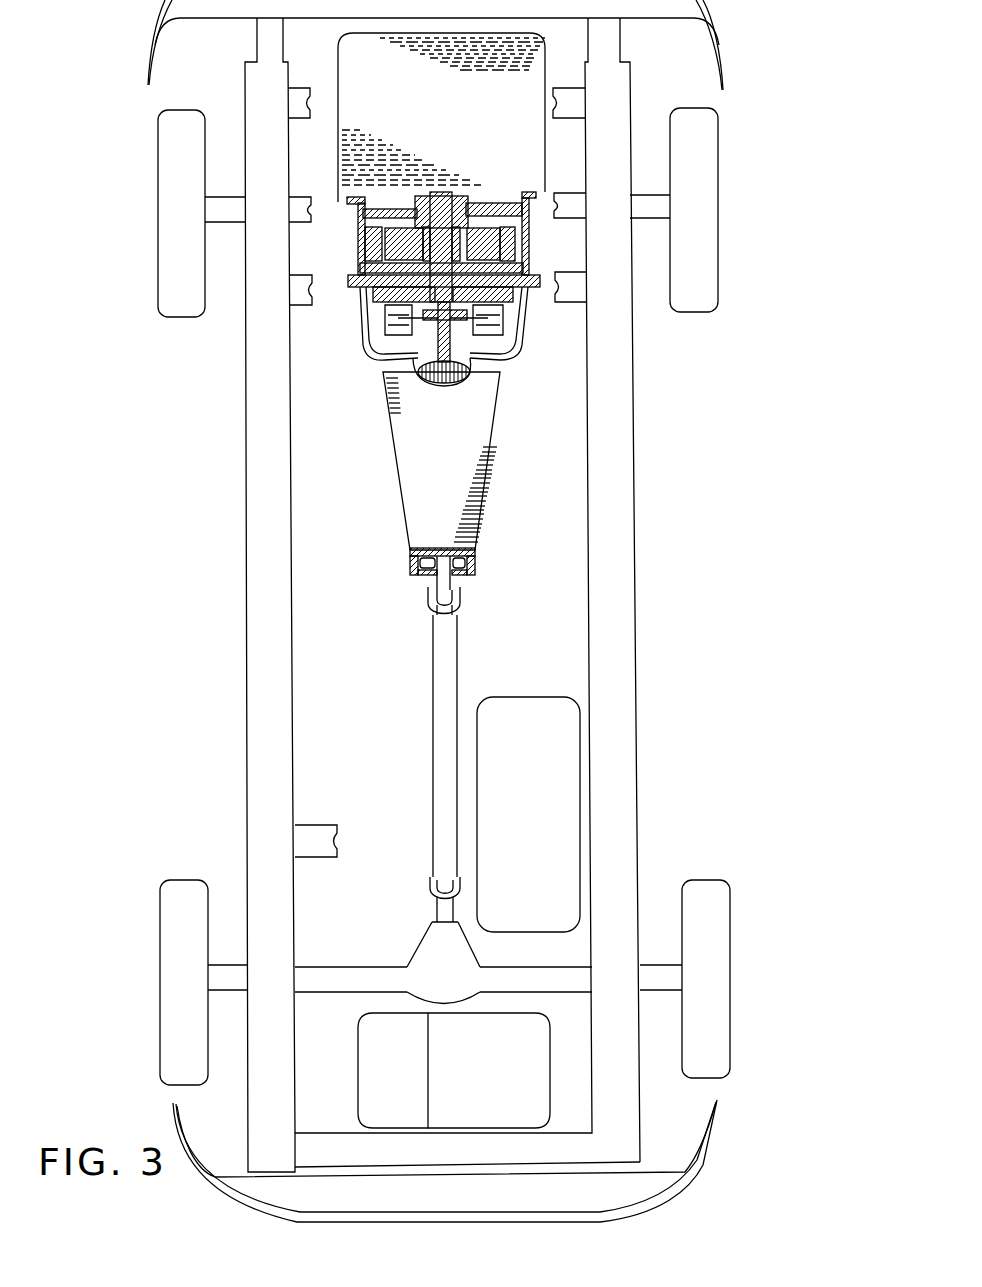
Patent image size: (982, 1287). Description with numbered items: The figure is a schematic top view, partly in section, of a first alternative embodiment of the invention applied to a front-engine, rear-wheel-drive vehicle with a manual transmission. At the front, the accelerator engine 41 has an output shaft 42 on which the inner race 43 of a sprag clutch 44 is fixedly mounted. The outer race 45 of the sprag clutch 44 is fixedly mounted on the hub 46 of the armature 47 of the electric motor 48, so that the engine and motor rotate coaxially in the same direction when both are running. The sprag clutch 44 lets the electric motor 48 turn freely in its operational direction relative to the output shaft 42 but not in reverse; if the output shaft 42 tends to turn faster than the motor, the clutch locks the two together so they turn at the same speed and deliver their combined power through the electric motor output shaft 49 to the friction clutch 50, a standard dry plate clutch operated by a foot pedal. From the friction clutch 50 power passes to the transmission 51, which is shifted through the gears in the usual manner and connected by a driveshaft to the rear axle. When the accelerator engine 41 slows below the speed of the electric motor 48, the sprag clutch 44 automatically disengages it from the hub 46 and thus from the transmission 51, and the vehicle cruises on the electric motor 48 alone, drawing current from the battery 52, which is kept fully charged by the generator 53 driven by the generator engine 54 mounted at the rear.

The accelerator engine 41 is at (457, 128).
The output shaft 42 is at (530, 193).
The inner race 43 is at (413, 213).
The sprag clutch 44 is at (417, 233).
The outer race 45 is at (417, 247).
The hub 46 is at (500, 223).
The armature 47 is at (530, 232).
The electric motor 48 is at (547, 287).
The electric motor output shaft 49 is at (357, 293).
The friction clutch 50 is at (375, 328).
The transmission 51 is at (458, 453).
The battery 52 is at (545, 816).
The generator 53 is at (405, 1091).
The generator engine 54 is at (500, 1088).